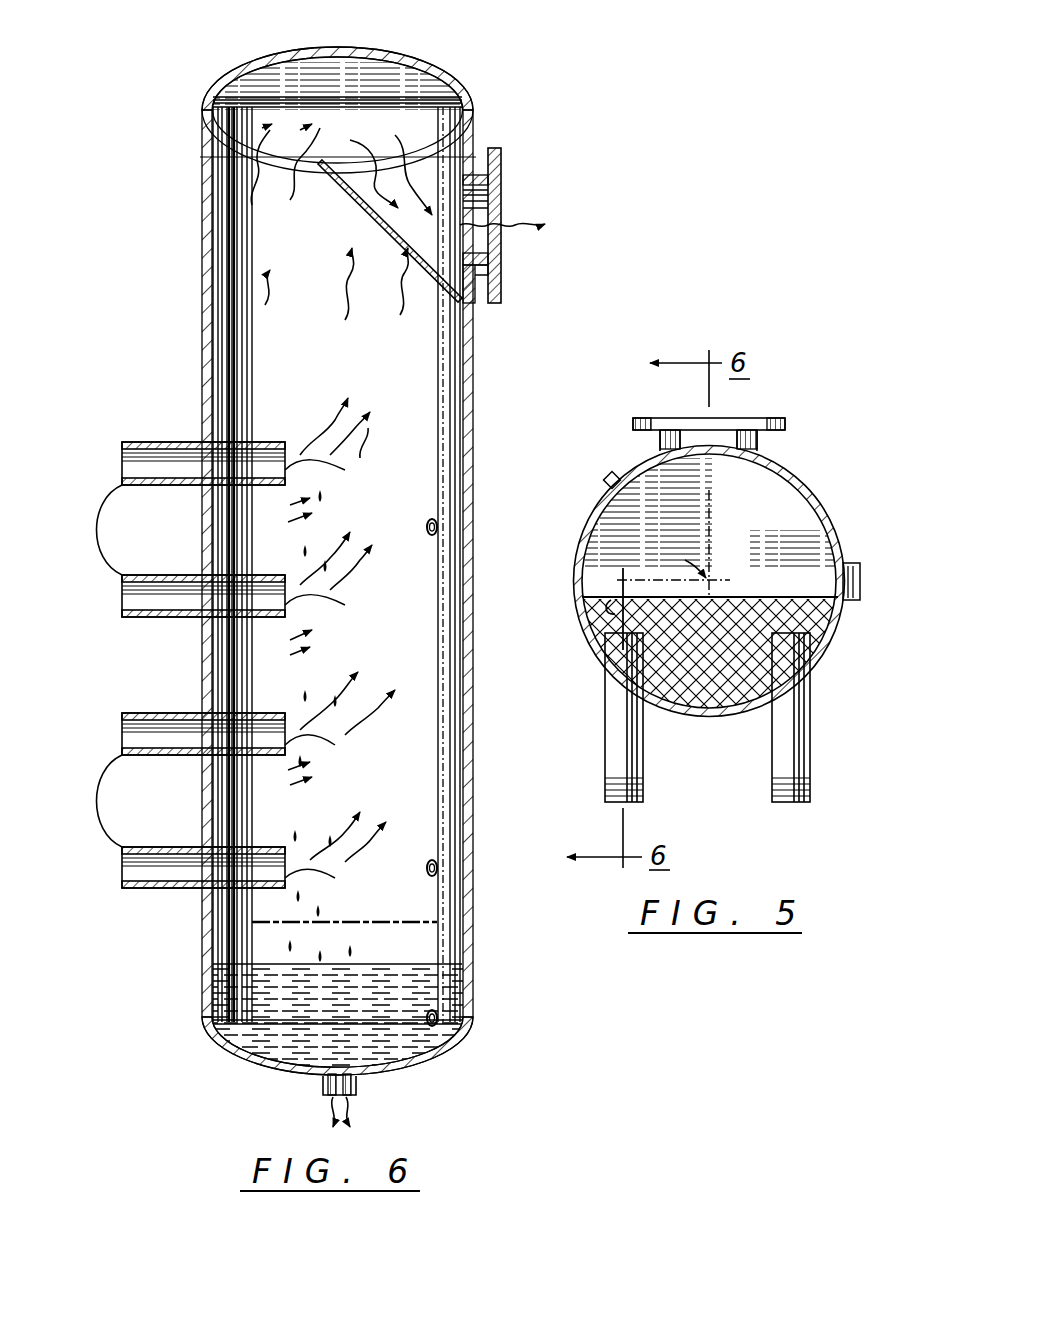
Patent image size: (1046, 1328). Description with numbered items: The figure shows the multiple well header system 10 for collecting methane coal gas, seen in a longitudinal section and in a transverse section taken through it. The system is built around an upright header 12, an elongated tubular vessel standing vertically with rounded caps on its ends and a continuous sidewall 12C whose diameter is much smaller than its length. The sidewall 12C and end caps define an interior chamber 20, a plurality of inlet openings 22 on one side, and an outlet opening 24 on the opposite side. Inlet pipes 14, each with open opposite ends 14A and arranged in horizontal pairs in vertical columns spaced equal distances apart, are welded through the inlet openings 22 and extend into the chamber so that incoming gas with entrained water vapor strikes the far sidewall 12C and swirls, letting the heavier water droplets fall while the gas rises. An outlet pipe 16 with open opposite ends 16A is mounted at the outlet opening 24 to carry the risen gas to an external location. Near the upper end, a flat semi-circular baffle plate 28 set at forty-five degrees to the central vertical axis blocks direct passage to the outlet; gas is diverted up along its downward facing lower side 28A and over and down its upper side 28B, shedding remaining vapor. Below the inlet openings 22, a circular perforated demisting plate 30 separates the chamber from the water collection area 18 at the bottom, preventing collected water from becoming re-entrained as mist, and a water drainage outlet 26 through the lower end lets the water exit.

In FIG. 6, the multiple well header system 10 is at (455, 46).
In FIG. 5, the multiple well header system 10 is at (815, 455).
In FIG. 6, the upright header 12 is at (328, 541).
In FIG. 5, the upright header 12 is at (718, 566).
In FIG. 5, the continuous sidewall 12C is at (592, 522).
In FIG. 6, the inlet pipes 14 is at (224, 668).
In FIG. 5, the inlet pipes 14 is at (706, 717).
In FIG. 6, the open opposite ends 14A is at (163, 844).
In FIG. 5, the open opposite ends 14A is at (618, 640).
In FIG. 6, the outlet pipe 16 is at (524, 202).
In FIG. 5, the outlet pipe 16 is at (709, 416).
In FIG. 6, the open opposite ends 16A is at (502, 196).
In FIG. 5, the open opposite ends 16A is at (740, 418).
In FIG. 6, the water collection area 18 is at (354, 1051).
In FIG. 6, the interior chamber 20 is at (364, 364).
In FIG. 5, the interior chamber 20 is at (770, 503).
In FIG. 6, the inlet openings 22 is at (212, 442).
In FIG. 6, the outlet opening 24 is at (498, 250).
In FIG. 6, the water drainage outlet 26 is at (322, 1088).
In FIG. 6, the baffle plate 28 is at (355, 200).
In FIG. 5, the baffle plate 28 is at (610, 614).
In FIG. 6, the lower side 28A is at (370, 208).
In FIG. 6, the upper side 28B is at (360, 165).
In FIG. 6, the perforated demisting plate 30 is at (425, 920).
In FIG. 5, the perforated demisting plate 30 is at (766, 508).